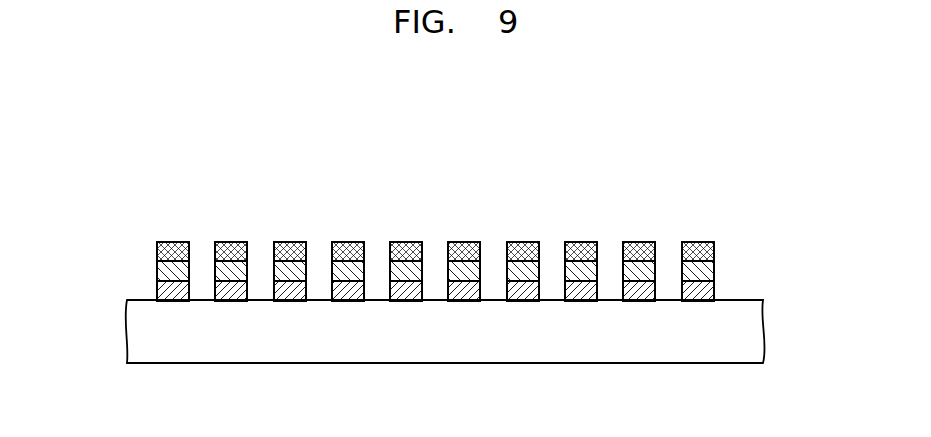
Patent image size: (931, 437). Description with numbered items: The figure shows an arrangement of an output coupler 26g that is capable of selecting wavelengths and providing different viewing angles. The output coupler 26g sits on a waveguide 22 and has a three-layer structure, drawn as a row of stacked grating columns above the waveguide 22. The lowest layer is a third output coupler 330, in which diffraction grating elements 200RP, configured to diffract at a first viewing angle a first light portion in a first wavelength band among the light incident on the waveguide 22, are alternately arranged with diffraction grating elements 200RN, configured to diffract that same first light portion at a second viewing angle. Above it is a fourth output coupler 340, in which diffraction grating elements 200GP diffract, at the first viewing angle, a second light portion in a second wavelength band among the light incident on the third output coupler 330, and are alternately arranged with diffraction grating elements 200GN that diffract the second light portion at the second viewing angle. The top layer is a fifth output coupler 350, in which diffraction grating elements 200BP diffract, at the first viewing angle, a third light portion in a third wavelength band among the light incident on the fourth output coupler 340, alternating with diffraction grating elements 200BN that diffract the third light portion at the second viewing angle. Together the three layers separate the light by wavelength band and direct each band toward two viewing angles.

The waveguide 22 is at (752, 332).
The output coupler 26g is at (715, 172).
The diffraction grating elements 200BP is at (157, 248).
The diffraction grating elements 200GP is at (157, 270).
The diffraction grating elements 200RP is at (157, 292).
The diffraction grating elements 200BN is at (232, 247).
The diffraction grating elements 200GN is at (231, 273).
The diffraction grating elements 200RN is at (228, 284).
The fifth output coupler 350 is at (716, 251).
The fourth output coupler 340 is at (716, 272).
The third output coupler 330 is at (716, 290).